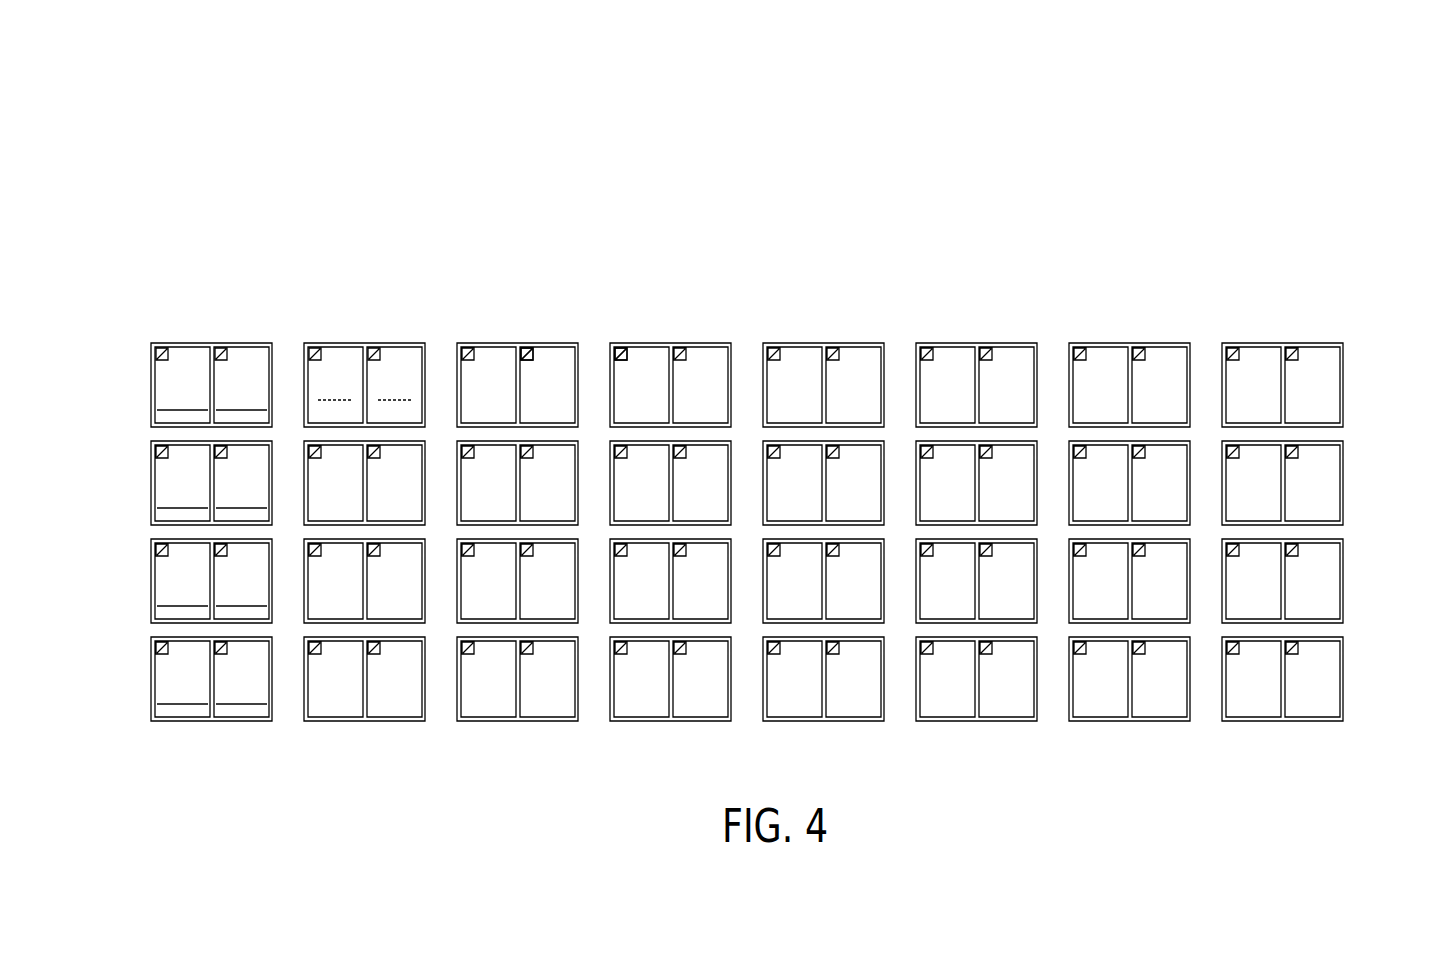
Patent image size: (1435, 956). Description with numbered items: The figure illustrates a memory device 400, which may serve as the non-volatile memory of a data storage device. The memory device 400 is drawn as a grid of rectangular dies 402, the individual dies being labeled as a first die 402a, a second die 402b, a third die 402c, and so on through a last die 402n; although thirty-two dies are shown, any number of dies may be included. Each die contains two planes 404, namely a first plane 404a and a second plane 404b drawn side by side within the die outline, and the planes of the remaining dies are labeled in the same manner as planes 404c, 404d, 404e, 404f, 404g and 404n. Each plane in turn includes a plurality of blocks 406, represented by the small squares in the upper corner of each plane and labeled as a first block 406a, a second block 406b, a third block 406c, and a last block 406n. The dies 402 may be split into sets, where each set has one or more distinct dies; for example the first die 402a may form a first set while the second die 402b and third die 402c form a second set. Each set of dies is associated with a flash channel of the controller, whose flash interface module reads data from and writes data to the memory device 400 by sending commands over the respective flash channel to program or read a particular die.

The memory device 400 is at (152, 70).
The dies 402 is at (471, 343).
The first die 402a is at (150, 382).
The second die 402b is at (150, 480).
The third die 402c is at (150, 578).
The die 402n is at (150, 676).
The planes 404 is at (365, 385).
The first plane 404a is at (182, 384).
The second plane 404b is at (241, 384).
The plane P2 404c is at (182, 482).
The plane P5 404d is at (241, 482).
The plane P4 404e is at (182, 580).
The plane P7 404f is at (241, 580).
The plane P6 404g is at (182, 678).
The plane Pn 404n is at (241, 678).
The block 406 is at (523, 347).
The block 406a is at (164, 346).
The block 406b is at (222, 346).
The block 406c is at (310, 346).
The block 406n is at (373, 346).